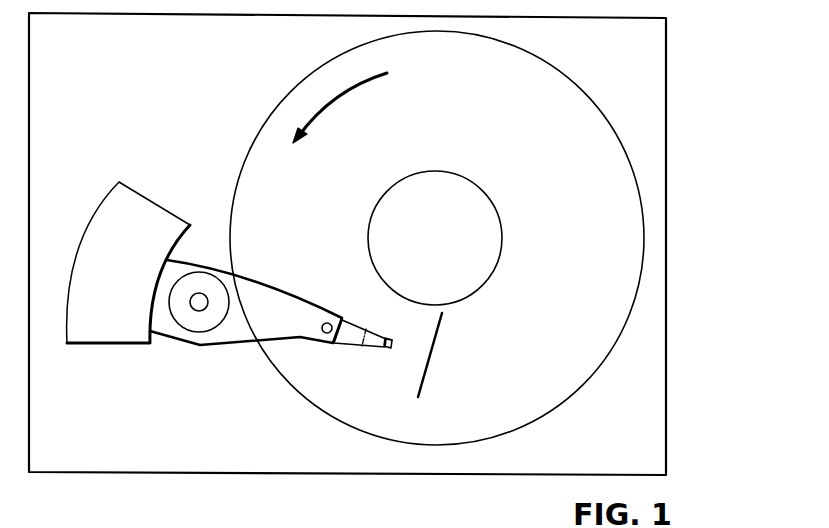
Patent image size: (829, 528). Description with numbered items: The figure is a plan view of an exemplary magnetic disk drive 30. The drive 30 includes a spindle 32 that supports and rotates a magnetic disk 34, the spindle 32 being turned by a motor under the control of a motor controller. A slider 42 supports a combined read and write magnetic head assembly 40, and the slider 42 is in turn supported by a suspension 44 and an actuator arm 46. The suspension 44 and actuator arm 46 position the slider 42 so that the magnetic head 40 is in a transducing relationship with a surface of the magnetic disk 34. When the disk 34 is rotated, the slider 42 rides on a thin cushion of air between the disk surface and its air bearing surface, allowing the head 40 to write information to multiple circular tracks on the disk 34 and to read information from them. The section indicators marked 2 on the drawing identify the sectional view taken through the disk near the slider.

The magnetic disk drive 30 is at (693, 47).
The spindle 32 is at (474, 182).
The magnetic disk 34 is at (585, 260).
The combined read and write magnetic head assembly 40 is at (393, 347).
The slider 42 is at (391, 338).
The suspension 44 is at (352, 345).
The actuator arm 46 is at (257, 285).
The section line 2- 2 is at (460, 326).